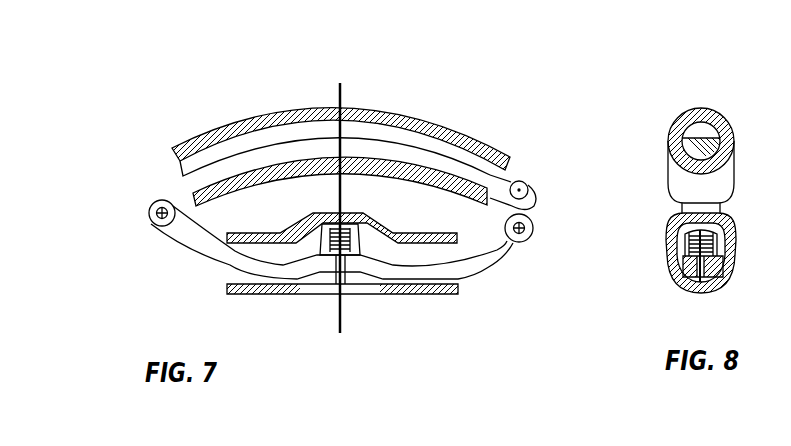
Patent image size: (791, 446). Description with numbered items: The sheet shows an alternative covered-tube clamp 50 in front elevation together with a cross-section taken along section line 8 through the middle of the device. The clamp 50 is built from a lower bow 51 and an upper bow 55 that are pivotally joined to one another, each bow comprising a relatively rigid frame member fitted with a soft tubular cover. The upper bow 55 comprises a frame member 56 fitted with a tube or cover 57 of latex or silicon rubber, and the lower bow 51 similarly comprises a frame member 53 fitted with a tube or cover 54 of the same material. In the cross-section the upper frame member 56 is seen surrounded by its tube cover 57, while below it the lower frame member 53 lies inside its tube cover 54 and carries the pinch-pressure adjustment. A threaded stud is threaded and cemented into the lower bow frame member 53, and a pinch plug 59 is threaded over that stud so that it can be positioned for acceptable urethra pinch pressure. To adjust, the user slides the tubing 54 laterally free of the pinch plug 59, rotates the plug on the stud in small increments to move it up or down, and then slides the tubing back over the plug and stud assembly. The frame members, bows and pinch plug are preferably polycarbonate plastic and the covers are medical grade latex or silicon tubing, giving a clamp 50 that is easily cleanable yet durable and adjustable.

In FIG. 7, the clamp 50 is at (156, 172).
In FIG. 7, the lower bow 51 is at (176, 264).
In FIG. 7, the upper bow 55 is at (426, 108).
In FIG. 7, the section line 8— 8 is at (340, 83).
In FIG. 8, the tube or cover 57 is at (700, 107).
In FIG. 8, the frame member 56 is at (726, 149).
In FIG. 8, the frame member 53 is at (718, 272).
In FIG. 8, the tube or cover 54 is at (690, 287).
In FIG. 8, the pinch plug 59 is at (722, 250).